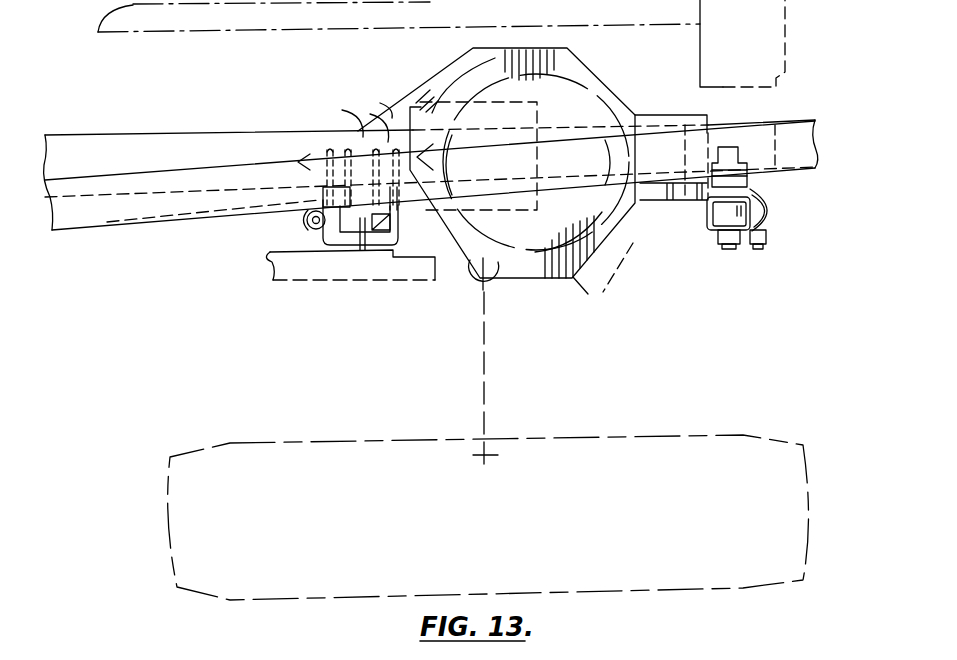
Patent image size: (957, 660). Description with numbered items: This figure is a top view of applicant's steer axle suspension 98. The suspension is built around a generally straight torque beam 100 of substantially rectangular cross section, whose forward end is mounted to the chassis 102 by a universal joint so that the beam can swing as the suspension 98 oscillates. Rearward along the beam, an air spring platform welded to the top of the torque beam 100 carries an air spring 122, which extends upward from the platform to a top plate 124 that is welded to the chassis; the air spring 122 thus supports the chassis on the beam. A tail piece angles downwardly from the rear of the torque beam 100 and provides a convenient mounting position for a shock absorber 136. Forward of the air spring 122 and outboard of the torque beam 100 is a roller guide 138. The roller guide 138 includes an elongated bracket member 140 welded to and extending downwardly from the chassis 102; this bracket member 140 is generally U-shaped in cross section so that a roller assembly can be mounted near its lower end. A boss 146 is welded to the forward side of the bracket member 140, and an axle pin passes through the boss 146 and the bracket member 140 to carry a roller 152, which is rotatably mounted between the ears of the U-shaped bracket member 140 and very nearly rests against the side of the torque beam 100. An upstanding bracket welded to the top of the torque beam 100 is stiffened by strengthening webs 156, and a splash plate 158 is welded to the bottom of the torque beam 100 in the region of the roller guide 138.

The steer axle embodiment 98 is at (248, 232).
The torque beam 100 is at (185, 142).
The chassis 102 is at (163, 227).
The air spring 122 is at (630, 230).
The top plate 124 is at (517, 268).
The shock absorber 136 is at (777, 212).
The roller guide 138 is at (353, 253).
The elongated bracket member 140 is at (388, 258).
The boss 146 is at (318, 228).
The roller 152 is at (362, 250).
The strengthening webs 156 is at (356, 128).
The splash plate 158 is at (387, 120).